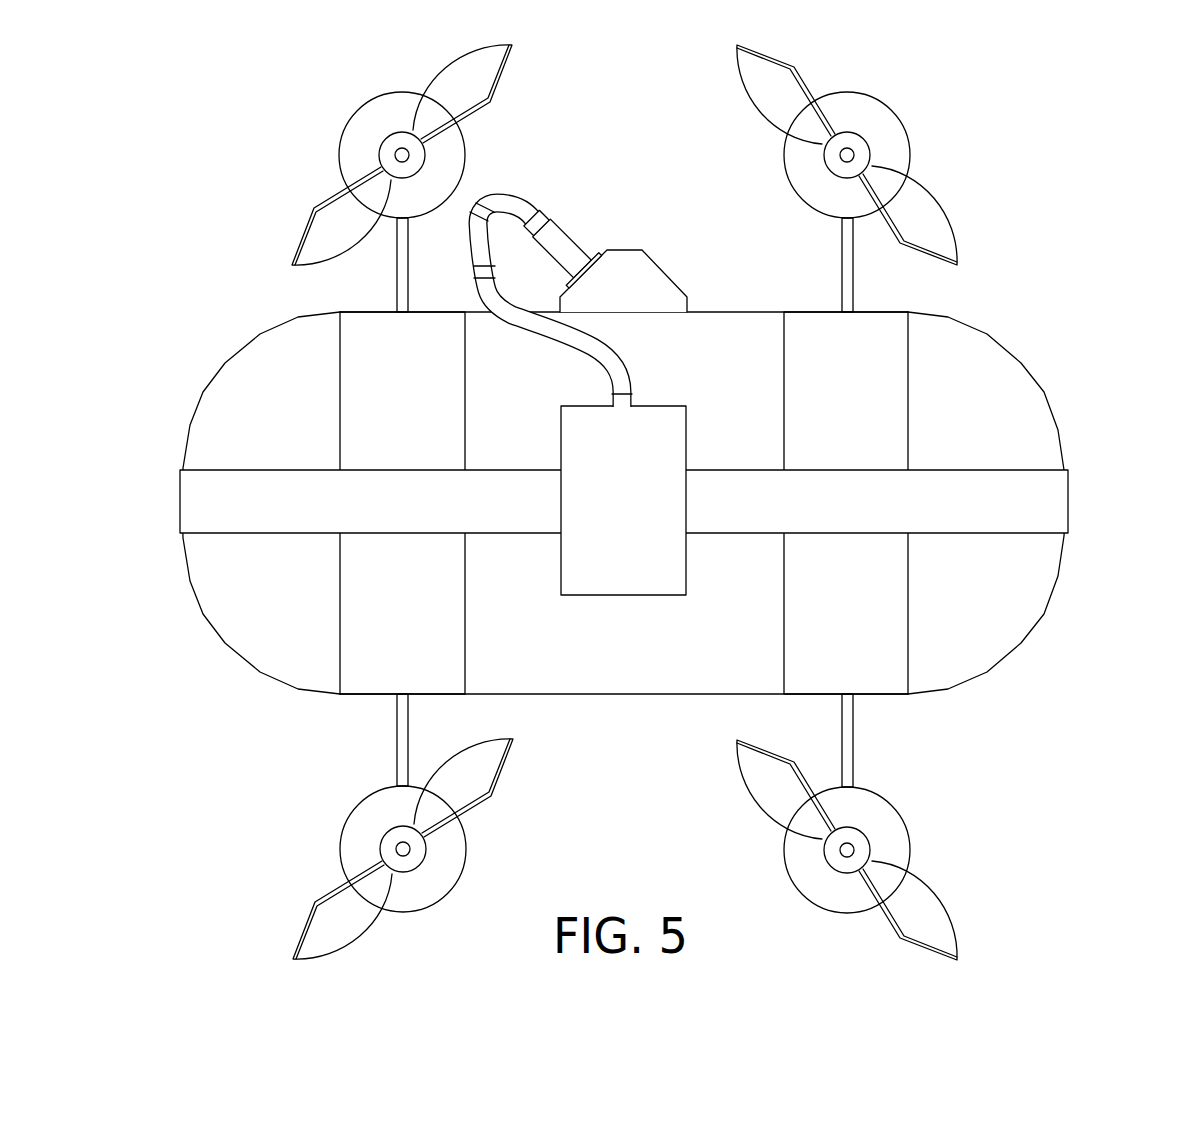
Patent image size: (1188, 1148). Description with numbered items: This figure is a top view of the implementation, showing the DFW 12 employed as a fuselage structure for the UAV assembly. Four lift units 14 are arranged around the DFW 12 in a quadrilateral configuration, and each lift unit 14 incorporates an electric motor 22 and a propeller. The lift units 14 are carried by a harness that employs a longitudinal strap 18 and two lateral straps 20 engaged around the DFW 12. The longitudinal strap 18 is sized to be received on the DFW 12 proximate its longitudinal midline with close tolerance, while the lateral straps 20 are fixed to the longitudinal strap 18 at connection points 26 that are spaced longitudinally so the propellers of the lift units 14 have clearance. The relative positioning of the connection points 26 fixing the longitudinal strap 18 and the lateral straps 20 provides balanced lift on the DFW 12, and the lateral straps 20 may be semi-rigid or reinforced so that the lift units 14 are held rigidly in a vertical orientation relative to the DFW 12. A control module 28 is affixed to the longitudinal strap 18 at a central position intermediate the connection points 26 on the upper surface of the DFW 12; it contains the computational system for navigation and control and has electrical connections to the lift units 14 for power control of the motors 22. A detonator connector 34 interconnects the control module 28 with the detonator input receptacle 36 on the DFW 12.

The DFW 12 is at (992, 620).
The lift unit 14 is at (603, 502).
The longitudinal strap 18 is at (996, 503).
The lateral strap 20 is at (387, 412).
The electric motor 22 is at (284, 216).
The connection point 26 is at (387, 507).
The control module 28 is at (630, 558).
The detonator connector 34 is at (520, 202).
The detonator input receptacle 36 is at (594, 248).